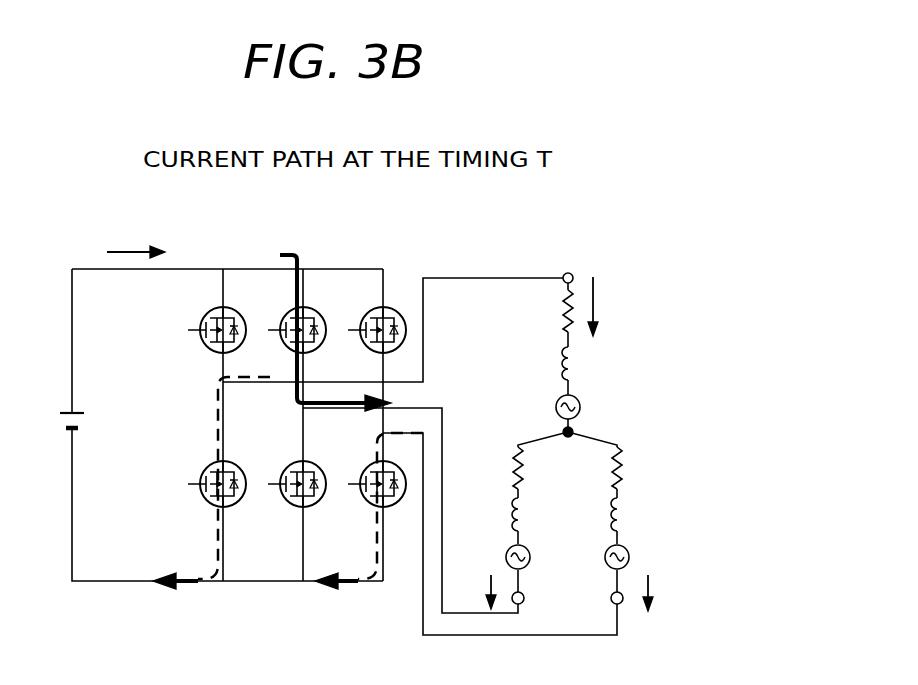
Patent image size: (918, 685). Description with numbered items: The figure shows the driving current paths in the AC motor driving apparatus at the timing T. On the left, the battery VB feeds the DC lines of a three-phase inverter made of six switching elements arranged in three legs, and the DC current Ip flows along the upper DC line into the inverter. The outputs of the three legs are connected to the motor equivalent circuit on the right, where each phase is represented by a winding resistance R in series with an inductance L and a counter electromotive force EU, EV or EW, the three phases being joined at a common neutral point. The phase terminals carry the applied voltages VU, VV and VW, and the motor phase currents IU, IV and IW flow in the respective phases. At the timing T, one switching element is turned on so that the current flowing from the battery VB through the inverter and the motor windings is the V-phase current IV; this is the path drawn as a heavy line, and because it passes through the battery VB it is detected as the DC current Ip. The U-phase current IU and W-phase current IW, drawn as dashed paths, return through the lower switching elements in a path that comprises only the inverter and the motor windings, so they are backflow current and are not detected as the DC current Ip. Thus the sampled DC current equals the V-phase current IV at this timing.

The battery VB is at (59, 409).
The DC current Ip is at (137, 240).
The U-phase motor phase current IU is at (391, 433).
The V-phase motor phase current IV is at (388, 421).
The W-phase motor phase current IW is at (499, 522).
The U-phase applied voltage VU is at (584, 265).
The V-phase applied voltage VV is at (531, 611).
The W-phase applied voltage VW is at (601, 611).
The winding resistance R is at (567, 389).
The inductance L is at (569, 439).
The U-phase counter electromotive force EU is at (551, 410).
The V-phase counter electromotive force EV is at (502, 557).
The W-phase counter electromotive force EW is at (634, 557).